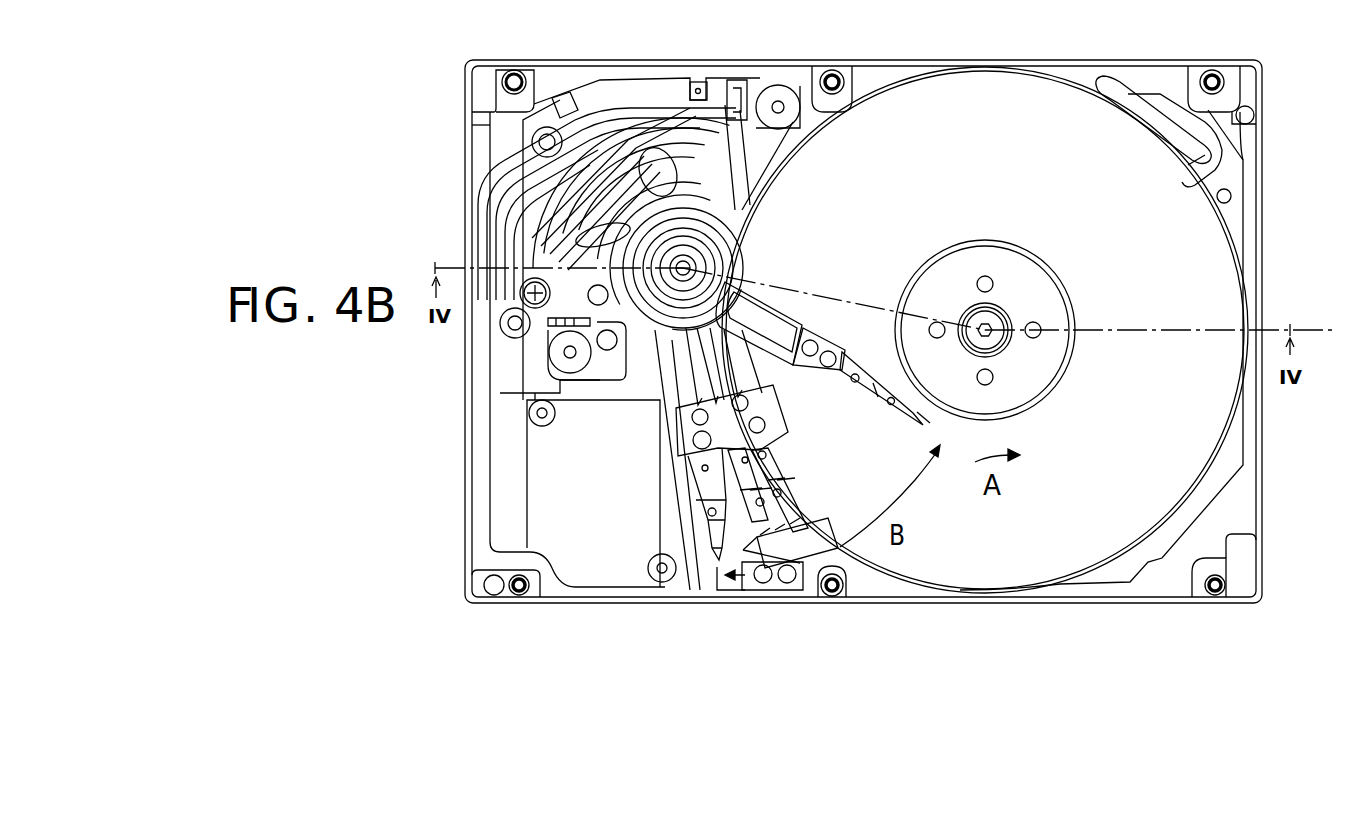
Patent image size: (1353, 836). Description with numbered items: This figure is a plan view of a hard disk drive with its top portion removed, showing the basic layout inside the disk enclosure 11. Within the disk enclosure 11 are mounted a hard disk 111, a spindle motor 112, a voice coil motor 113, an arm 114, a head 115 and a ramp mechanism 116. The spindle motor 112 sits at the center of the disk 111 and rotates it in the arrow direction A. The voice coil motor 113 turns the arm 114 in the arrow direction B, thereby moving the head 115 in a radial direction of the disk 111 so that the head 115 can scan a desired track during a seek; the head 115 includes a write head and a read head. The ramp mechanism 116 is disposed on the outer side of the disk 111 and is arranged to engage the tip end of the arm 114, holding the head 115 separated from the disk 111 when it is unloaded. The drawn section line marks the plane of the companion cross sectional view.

The disk enclosure 11 is at (863, 331).
The hard disk 111 is at (1200, 428).
The spindle motor 112 is at (997, 313).
The voice coil motor 113 is at (737, 86).
The arm 114 is at (862, 372).
The head 115 is at (915, 426).
The ramp mechanism 116 is at (842, 536).